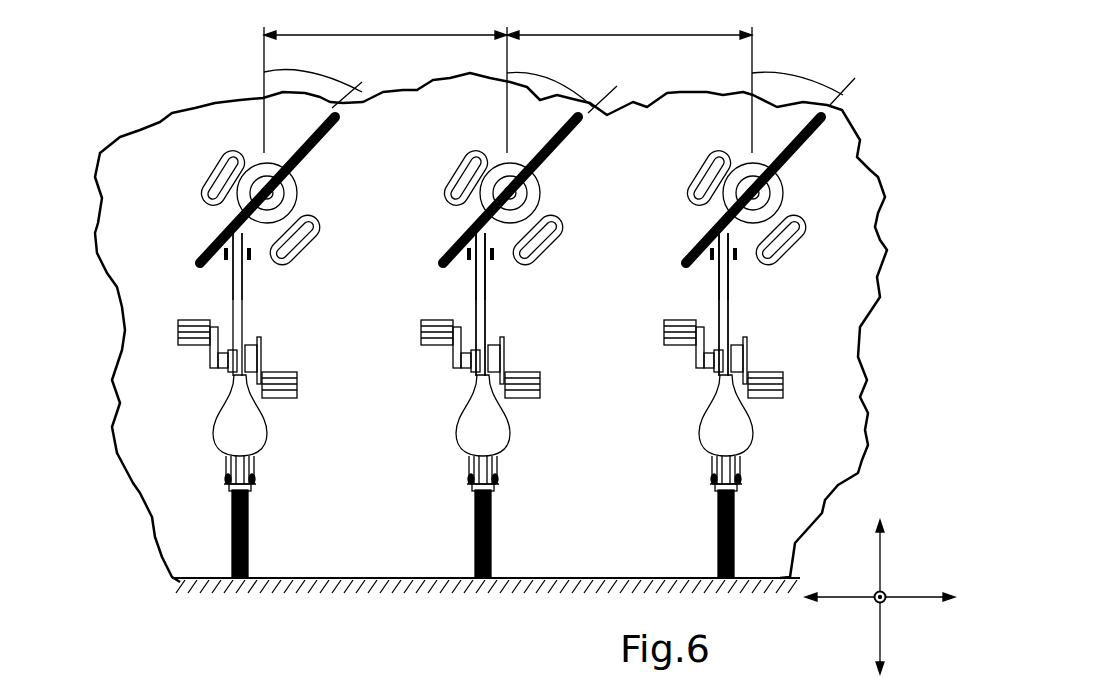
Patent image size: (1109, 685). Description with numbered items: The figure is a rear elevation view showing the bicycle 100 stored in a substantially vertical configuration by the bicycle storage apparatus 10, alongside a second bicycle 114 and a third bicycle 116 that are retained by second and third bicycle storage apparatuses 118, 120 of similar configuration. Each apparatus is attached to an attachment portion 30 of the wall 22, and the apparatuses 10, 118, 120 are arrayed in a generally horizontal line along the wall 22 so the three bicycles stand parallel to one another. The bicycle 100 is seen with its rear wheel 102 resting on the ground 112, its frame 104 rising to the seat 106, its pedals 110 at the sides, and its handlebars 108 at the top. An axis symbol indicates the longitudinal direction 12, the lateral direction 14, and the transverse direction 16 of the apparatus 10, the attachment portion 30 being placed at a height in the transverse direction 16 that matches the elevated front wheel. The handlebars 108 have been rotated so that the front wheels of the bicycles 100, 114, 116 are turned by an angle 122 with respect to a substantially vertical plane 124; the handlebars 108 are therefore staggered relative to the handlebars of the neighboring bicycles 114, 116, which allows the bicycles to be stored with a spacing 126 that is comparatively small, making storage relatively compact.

The bicycle storage apparatus 10 is at (262, 265).
The longitudinal direction 12 is at (886, 602).
The lateral direction 14 is at (852, 603).
The transverse direction 16 is at (884, 565).
The wall 22 is at (184, 462).
The attachment portion 30 is at (332, 206).
The bicycle 100 is at (168, 171).
The rear wheel 102 is at (252, 548).
The frame 104 is at (232, 300).
The seat 106 is at (266, 446).
The handlebars 108 is at (206, 184).
The pedals 110 is at (205, 346).
The ground 112 is at (216, 578).
The second bicycle 114 is at (434, 185).
The third bicycle 116 is at (678, 183).
The second bicycle storage apparatus 118 is at (507, 265).
The third bicycle storage apparatus 120 is at (745, 265).
The angle 122 is at (333, 70).
The substantially vertical plane 124 is at (264, 80).
The spacing 126 is at (464, 36).